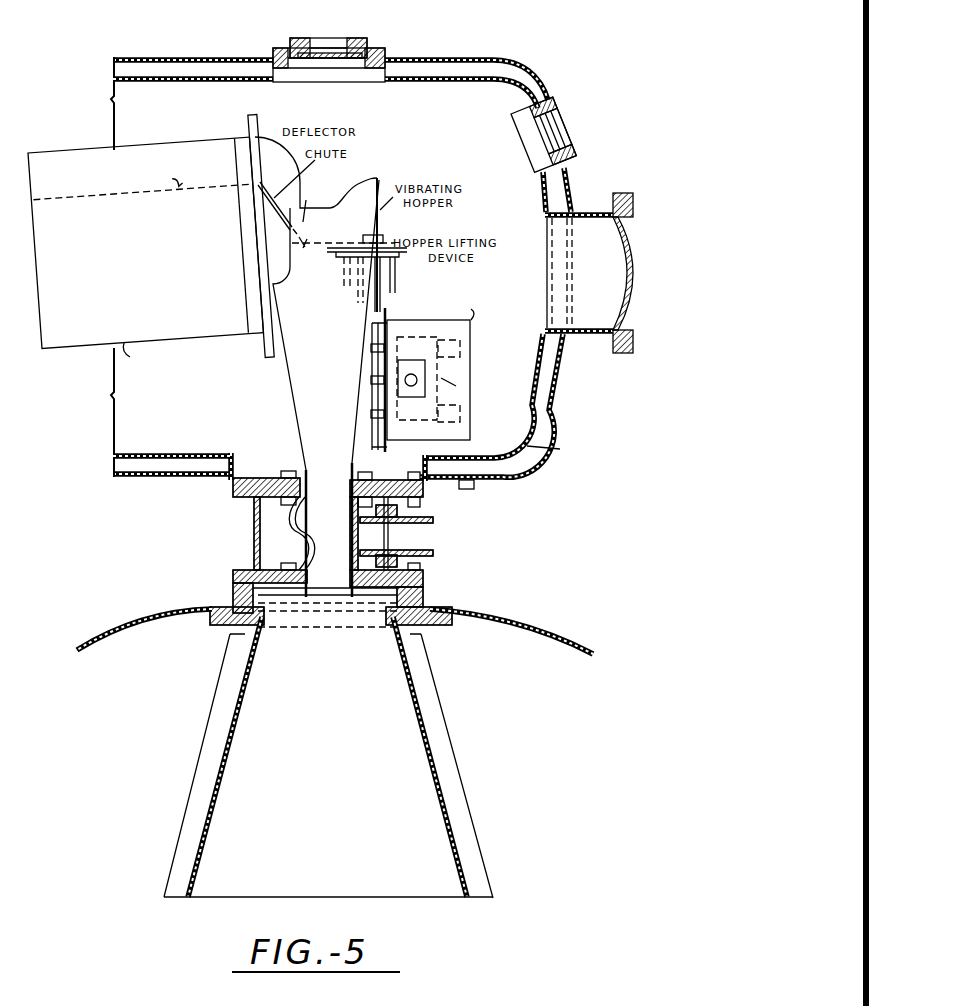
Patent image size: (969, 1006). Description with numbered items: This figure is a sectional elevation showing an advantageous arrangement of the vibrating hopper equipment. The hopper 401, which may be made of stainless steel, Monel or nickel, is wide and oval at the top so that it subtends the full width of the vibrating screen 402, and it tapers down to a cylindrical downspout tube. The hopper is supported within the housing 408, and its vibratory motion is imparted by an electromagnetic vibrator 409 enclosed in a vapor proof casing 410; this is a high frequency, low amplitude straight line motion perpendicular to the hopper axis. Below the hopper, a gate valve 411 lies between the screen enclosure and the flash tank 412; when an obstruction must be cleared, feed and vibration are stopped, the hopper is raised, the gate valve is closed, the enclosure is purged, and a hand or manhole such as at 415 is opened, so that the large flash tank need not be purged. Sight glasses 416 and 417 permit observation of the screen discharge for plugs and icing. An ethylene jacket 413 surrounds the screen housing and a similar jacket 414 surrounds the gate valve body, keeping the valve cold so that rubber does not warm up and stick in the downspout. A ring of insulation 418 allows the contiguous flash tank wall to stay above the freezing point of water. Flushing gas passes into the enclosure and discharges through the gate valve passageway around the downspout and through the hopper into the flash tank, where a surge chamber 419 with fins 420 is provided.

The hopper 401 is at (294, 421).
The vibrating screen 402 is at (56, 348).
The housing 408 is at (544, 348).
The electromagnetic vibrator 409 is at (441, 377).
The vapor proof casing 410 is at (470, 413).
The gate valve 411 is at (428, 530).
The flash tank 412 is at (597, 636).
The ethylene jacket 413 is at (557, 406).
The jacket 414 is at (253, 538).
The manhole 415 is at (592, 209).
The sight glass 416 is at (562, 128).
The sight glass 417 is at (334, 42).
The ring of insulation 418 is at (424, 589).
The surge chamber 419 is at (462, 885).
The fins 420 is at (462, 790).